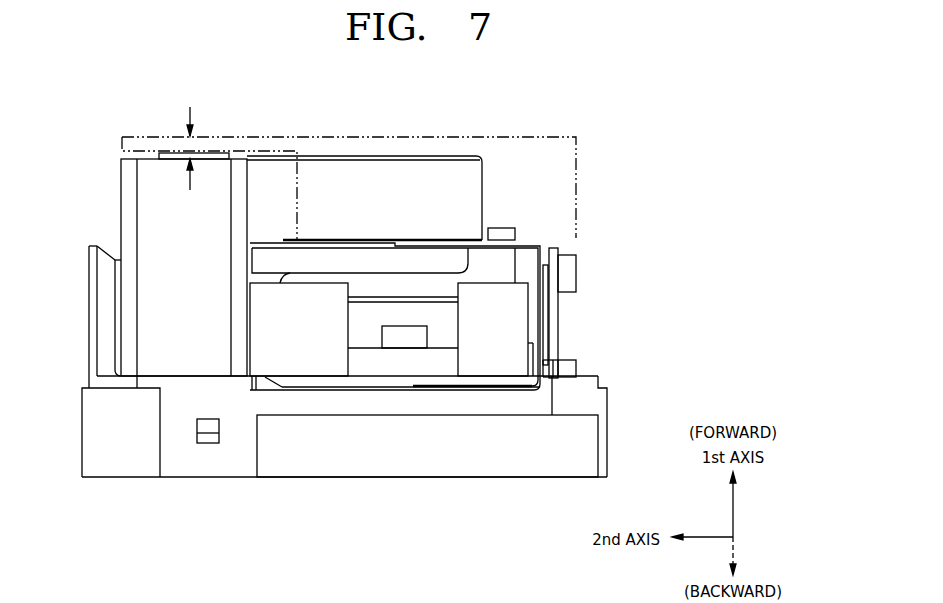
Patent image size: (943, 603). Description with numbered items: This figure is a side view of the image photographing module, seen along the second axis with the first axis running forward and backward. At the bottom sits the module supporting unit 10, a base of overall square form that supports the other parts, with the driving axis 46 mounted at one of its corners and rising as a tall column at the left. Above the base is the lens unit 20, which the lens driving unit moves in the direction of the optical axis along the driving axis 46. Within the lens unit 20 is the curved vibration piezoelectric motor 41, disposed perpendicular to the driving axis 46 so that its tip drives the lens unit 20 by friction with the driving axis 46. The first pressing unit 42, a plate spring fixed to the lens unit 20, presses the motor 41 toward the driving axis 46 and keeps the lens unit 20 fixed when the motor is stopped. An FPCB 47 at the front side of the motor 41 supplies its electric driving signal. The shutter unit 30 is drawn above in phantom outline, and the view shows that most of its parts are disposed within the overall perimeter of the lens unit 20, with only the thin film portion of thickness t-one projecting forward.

The module supporting unit 10 is at (618, 475).
The lens unit 20 is at (700, 375).
The shutter unit 30 is at (505, 150).
The curved vibration piezoelectric motor 41 is at (505, 275).
The first pressing unit 42 is at (555, 320).
The driving axis 46 is at (145, 201).
The FPCB 47 is at (540, 240).